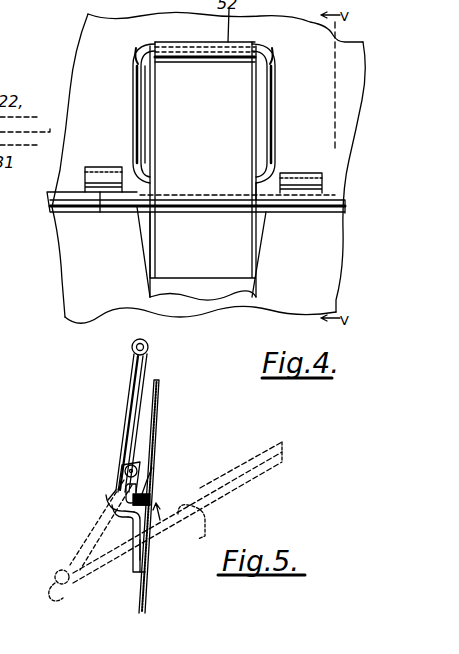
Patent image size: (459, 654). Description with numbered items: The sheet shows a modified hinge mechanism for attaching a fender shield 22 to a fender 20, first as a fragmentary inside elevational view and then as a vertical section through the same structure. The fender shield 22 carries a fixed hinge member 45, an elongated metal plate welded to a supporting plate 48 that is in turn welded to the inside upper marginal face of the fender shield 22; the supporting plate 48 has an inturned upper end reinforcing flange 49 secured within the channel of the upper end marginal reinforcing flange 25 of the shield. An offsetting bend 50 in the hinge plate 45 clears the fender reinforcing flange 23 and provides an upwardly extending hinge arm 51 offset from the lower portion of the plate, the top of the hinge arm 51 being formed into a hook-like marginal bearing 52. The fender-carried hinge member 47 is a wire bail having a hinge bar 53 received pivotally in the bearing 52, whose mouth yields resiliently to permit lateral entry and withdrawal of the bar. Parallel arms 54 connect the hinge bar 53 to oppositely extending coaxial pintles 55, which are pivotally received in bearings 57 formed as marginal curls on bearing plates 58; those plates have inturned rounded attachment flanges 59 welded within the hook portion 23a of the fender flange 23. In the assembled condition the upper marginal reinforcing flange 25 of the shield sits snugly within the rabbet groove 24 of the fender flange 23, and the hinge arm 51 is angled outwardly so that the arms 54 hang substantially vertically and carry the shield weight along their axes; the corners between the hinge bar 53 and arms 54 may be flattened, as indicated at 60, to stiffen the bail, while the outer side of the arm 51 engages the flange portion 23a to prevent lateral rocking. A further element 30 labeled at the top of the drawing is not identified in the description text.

In FIG. 4, the fender 20 is at (345, 110).
In FIG. 5, the fender 20 is at (158, 392).
In FIG. 4, the fender shield 22 is at (323, 257).
In FIG. 5, the fender shield 22 is at (240, 470).
In FIG. 4, the fender reinforcing flange 23 is at (263, 192).
In FIG. 5, the fender reinforcing flange 23 is at (150, 468).
In FIG. 4, the hook portion 23a is at (140, 193).
In FIG. 5, the hook portion 23a is at (118, 508).
In FIG. 5, the rabbet groove 24 is at (150, 492).
In FIG. 5, the upper end marginal reinforcing flange 25 is at (152, 497).
In FIG. 4, the upper support 30 is at (302, 0).
In FIG. 4, the hinge member 45 is at (233, 265).
In FIG. 5, the hinge member 45 is at (137, 543).
In FIG. 4, the hinge member 47 is at (278, 66).
In FIG. 5, the hinge member 47 is at (132, 383).
In FIG. 4, the supporting plate 48 is at (257, 238).
In FIG. 5, the supporting plate 48 is at (143, 573).
In FIG. 5, the inturned upper end reinforcing flange 49 is at (168, 526).
In FIG. 5, the offsetting bend 50 is at (123, 512).
In FIG. 4, the hinge arm 51 is at (232, 118).
In FIG. 5, the hinge arm 51 is at (127, 450).
In FIG. 5, the hook-like marginal bearing 52 is at (132, 338).
In FIG. 4, the hinge bar 53 is at (192, 43).
In FIG. 5, the hinge bar 53 is at (148, 350).
In FIG. 4, the parallel arms 54 is at (137, 117).
In FIG. 5, the parallel arms 54 is at (137, 408).
In FIG. 4, the pintles 55 is at (310, 173).
In FIG. 5, the pintles 55 is at (125, 472).
In FIG. 4, the bearings 57 is at (100, 167).
In FIG. 5, the bearings 57 is at (140, 475).
In FIG. 4, the bearing plates 58 is at (106, 198).
In FIG. 5, the inturned rounded attachment flanges 59 is at (123, 487).
In FIG. 4, the flattened connecting corners 60 is at (143, 56).